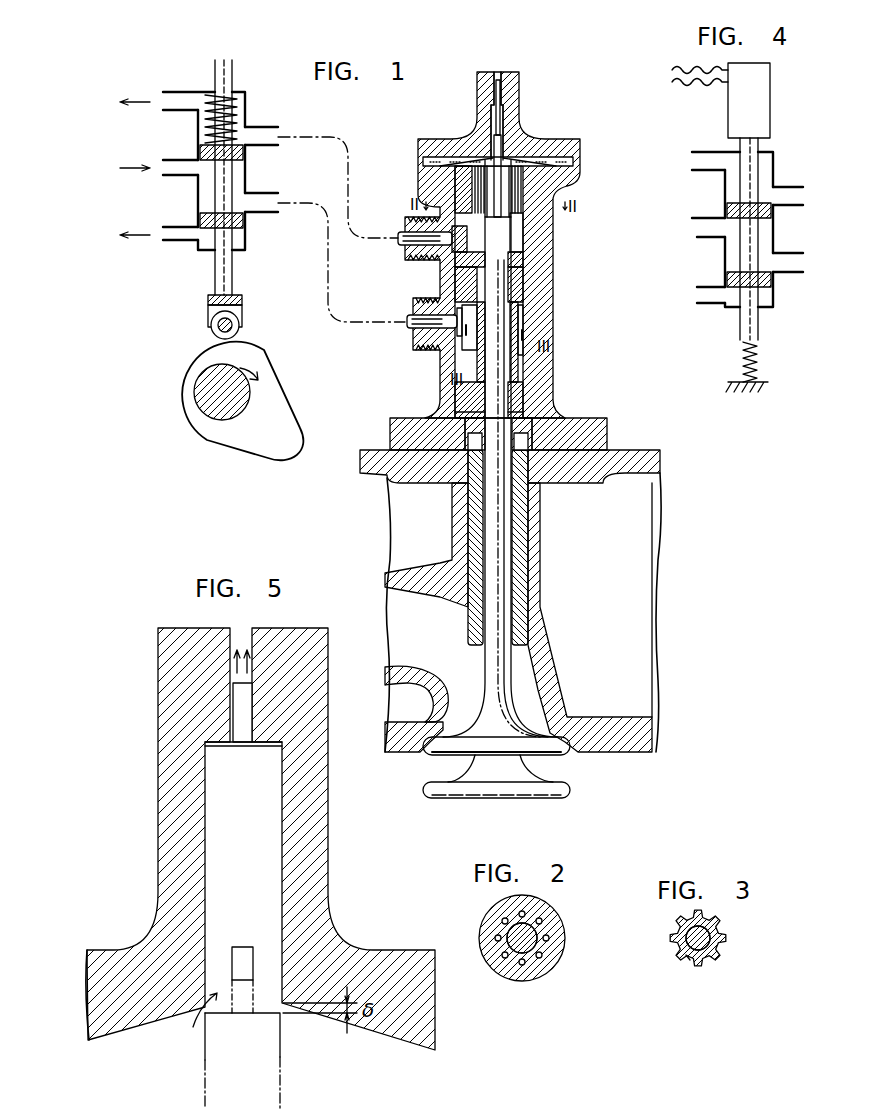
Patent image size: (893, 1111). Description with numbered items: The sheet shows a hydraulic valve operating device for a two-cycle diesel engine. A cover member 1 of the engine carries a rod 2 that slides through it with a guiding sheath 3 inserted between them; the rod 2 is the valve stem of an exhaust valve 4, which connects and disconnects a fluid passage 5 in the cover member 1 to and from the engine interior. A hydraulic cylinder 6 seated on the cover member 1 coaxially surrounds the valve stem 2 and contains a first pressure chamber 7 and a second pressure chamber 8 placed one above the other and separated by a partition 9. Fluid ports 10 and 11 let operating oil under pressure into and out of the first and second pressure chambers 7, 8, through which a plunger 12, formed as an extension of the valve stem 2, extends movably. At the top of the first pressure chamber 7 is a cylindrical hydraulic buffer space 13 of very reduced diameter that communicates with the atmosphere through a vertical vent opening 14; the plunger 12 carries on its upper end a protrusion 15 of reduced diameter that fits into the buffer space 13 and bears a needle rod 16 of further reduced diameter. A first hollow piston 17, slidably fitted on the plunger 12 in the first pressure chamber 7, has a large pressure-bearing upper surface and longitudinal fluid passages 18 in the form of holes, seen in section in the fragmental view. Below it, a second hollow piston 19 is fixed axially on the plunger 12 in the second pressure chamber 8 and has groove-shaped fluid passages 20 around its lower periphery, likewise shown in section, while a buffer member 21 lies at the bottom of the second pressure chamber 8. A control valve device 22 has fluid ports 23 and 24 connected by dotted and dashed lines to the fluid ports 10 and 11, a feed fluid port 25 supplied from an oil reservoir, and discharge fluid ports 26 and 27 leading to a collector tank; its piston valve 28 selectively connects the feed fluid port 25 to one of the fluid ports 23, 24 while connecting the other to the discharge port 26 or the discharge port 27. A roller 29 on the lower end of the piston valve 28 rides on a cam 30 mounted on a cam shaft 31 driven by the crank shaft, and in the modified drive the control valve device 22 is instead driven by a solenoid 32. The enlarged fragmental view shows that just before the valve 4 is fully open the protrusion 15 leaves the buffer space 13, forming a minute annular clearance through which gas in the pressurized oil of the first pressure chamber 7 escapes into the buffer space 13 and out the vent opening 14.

In FIG. 1, the cover member 1 is at (654, 600).
In FIG. 1, the rod 2 is at (488, 528).
In FIG. 1, the guiding sheath 3 is at (530, 522).
In FIG. 1, the exhaust valve 4 is at (475, 748).
In FIG. 1, the fluid passage 5 is at (416, 673).
In FIG. 1, the hydraulic cylinder 6 is at (547, 297).
In FIG. 1, the first pressure chamber 7 is at (517, 232).
In FIG. 1, the second pressure chamber 8 is at (517, 392).
In FIG. 1, the partition 9 is at (527, 293).
In FIG. 1, the fluid port 10 is at (448, 255).
In FIG. 1, the fluid port 11 is at (465, 338).
In FIG. 1, the plunger 12 is at (487, 187).
In FIG. 2, the plunger 12 is at (518, 930).
In FIG. 3, the plunger 12 is at (717, 930).
In FIG. 1, the hydraulic buffer space 13 is at (487, 122).
In FIG. 5, the hydraulic buffer space 13 is at (207, 742).
In FIG. 1, the vent opening 14 is at (497, 73).
In FIG. 5, the vent opening 14 is at (242, 633).
In FIG. 1, the protrusion 15 is at (498, 115).
In FIG. 5, the protrusion 15 is at (243, 791).
In FIG. 1, the needle rod 16 is at (500, 88).
In FIG. 5, the needle rod 16 is at (237, 710).
In FIG. 1, the first hollow piston 17 is at (540, 172).
In FIG. 2, the first hollow piston 17 is at (553, 925).
In FIG. 1, the fluid passages 18 is at (535, 165).
In FIG. 2, the fluid passages 18 is at (542, 958).
In FIG. 1, the second hollow piston 19 is at (520, 305).
In FIG. 3, the second hollow piston 19 is at (712, 957).
In FIG. 1, the fluid passages 20 is at (522, 368).
In FIG. 3, the fluid passages 20 is at (690, 958).
In FIG. 1, the buffer member 21 is at (522, 408).
In FIG. 1, the control valve device 22 is at (313, 100).
In FIG. 1, the fluid port 23 is at (246, 134).
In FIG. 4, the fluid port 23 is at (775, 190).
In FIG. 1, the fluid port 24 is at (246, 203).
In FIG. 4, the fluid port 24 is at (775, 263).
In FIG. 1, the feed fluid port 25 is at (196, 173).
In FIG. 4, the feed fluid port 25 is at (721, 232).
In FIG. 1, the discharge fluid port 26 is at (196, 108).
In FIG. 4, the discharge fluid port 26 is at (720, 163).
In FIG. 1, the discharge fluid port 27 is at (195, 238).
In FIG. 4, the discharge fluid port 27 is at (722, 298).
In FIG. 1, the piston valve 28 is at (233, 266).
In FIG. 4, the piston valve 28 is at (757, 327).
In FIG. 1, the roller 29 is at (240, 330).
In FIG. 1, the cam 30 is at (292, 404).
In FIG. 1, the cam shaft 31 is at (194, 393).
In FIG. 4, the solenoid 32 is at (721, 100).